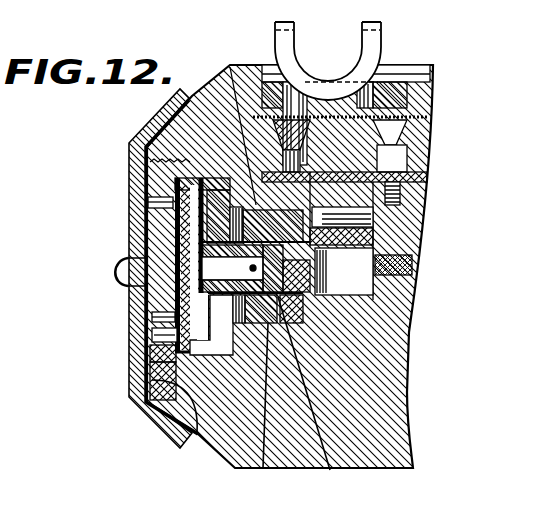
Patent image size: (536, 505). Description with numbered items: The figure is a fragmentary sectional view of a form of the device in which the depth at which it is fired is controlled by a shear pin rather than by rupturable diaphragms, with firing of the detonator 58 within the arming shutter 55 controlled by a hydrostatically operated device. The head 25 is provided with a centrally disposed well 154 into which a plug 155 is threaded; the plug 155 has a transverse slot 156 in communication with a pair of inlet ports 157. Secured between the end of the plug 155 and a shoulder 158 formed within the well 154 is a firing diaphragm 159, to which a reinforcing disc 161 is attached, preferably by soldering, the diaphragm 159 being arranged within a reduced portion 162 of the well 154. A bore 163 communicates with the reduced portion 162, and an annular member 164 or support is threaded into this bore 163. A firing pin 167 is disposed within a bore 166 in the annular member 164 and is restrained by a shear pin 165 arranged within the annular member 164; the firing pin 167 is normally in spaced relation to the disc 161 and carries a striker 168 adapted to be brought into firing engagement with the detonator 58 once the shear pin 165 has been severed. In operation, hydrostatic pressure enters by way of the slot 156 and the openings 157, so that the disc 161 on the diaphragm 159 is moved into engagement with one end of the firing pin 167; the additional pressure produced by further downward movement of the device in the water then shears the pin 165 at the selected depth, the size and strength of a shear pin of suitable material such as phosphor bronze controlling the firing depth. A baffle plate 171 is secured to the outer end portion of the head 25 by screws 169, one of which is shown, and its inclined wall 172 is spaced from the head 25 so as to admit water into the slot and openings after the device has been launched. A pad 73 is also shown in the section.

The head 25 is at (386, 375).
The arming shutter 55 is at (378, 235).
The detonator 58 is at (365, 222).
The pad 73 is at (418, 267).
The well 154 is at (177, 378).
The plug 155 is at (163, 360).
The transverse slot 156 is at (152, 334).
The inlet ports 157 is at (165, 320).
The shoulder 158 is at (165, 432).
The firing diaphragm 159 is at (190, 230).
The reinforcing disc 161 is at (197, 293).
The reduced portion 162 is at (222, 354).
The bore 163 is at (267, 468).
The annular member 164 is at (230, 68).
The shear pin 165 is at (250, 268).
The bore 166 is at (290, 295).
The firing pin 167 is at (329, 470).
The striker 168 is at (303, 268).
The screws 169 is at (122, 258).
The baffle plate 171 is at (135, 157).
The inclined wall 172 is at (148, 415).